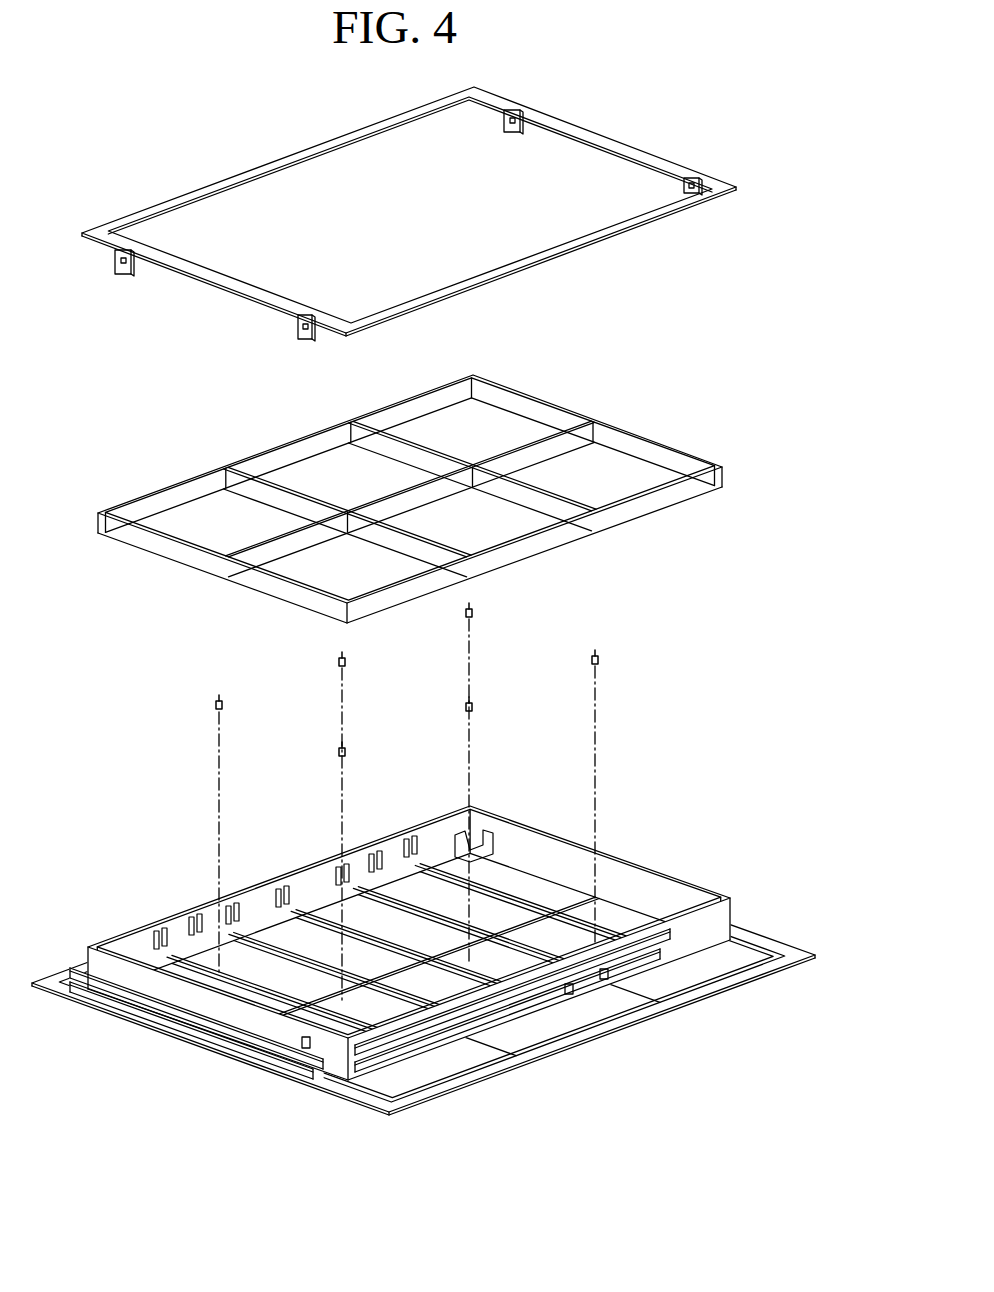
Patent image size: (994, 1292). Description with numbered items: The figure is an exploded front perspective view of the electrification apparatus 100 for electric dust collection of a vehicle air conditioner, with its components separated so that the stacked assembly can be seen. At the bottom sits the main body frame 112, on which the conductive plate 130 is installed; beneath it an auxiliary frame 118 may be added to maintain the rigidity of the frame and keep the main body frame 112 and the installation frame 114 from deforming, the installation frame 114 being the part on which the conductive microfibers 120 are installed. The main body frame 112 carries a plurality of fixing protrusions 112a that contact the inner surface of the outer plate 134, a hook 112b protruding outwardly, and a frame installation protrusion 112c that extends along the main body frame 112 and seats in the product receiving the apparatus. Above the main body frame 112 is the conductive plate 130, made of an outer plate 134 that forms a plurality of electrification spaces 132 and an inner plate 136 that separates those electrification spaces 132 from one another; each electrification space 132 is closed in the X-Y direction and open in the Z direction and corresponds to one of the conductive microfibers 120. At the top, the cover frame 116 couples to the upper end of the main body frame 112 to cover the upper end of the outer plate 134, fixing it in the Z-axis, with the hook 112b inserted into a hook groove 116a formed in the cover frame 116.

The electrification apparatus 100 is at (122, 104).
The cover frame 116 is at (290, 156).
The hook groove 116a is at (298, 320).
The conductive plate 130 is at (392, 499).
The electrification space 132 is at (212, 523).
The outer plate 134 is at (175, 552).
The inner plate 136 is at (276, 495).
The conductive microfiber 120 is at (213, 703).
The main body frame 112 is at (400, 972).
The fixing protrusion 112a is at (190, 938).
The hook 112b is at (306, 1046).
The frame installation protrusion 112c is at (242, 1035).
The installation frame 114 is at (533, 898).
The auxiliary frame 118 is at (478, 1080).